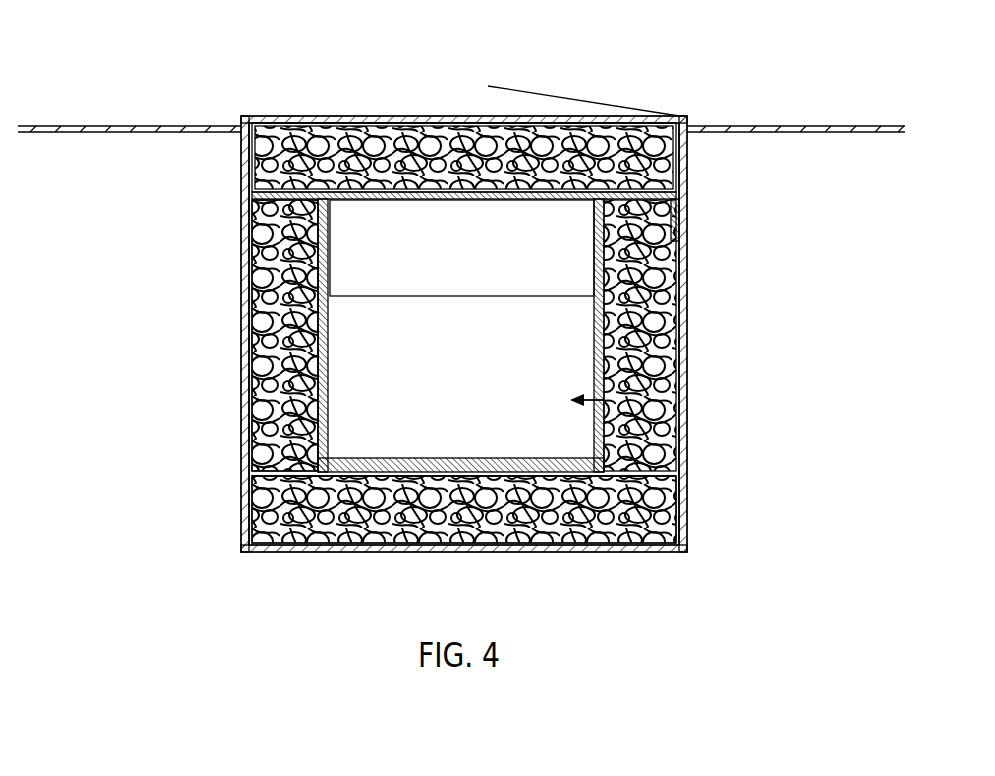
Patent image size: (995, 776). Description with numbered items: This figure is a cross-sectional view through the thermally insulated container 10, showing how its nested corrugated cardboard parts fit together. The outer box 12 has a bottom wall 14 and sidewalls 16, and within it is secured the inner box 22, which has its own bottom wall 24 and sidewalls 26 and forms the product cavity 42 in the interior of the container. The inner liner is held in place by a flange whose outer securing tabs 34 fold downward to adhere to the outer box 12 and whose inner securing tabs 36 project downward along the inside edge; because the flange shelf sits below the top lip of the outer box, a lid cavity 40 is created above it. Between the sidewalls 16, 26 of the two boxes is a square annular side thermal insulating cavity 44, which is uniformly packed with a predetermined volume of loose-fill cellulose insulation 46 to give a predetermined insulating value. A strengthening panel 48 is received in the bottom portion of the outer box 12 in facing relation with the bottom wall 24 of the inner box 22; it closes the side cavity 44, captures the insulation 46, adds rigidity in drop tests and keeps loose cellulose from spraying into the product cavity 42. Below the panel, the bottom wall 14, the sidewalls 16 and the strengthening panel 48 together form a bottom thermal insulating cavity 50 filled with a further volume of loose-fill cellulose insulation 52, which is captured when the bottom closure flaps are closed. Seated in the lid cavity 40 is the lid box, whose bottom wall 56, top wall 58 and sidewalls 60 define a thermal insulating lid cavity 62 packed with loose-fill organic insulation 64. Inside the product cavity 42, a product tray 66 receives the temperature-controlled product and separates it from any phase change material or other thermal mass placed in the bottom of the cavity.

The container 10 is at (722, 482).
The outer box 12 is at (262, 111).
The bottom wall 14 is at (450, 548).
The sidewalls 16 is at (247, 368).
The inner box 22 is at (676, 273).
The bottom wall 24 is at (388, 460).
The sidewalls 26 is at (257, 277).
The outer securing tabs 34 is at (678, 222).
The inner securing tabs 36 is at (338, 222).
The lid cavity 40 is at (238, 112).
The product cavity 42 is at (677, 343).
The side thermal insulating cavity 44 is at (677, 322).
The loose-fill cellulose insulation 46 is at (250, 320).
The strengthening panel 48 is at (670, 450).
The bottom thermal insulating cavity 50 is at (555, 533).
The loose-fill cellulose insulation 52 is at (368, 535).
The bottom wall 56 is at (337, 130).
The top wall 58 is at (572, 117).
The sidewalls 60 is at (248, 150).
The thermal insulating lid cavity 62 is at (495, 128).
The loose-fill organic insulation 64 is at (372, 130).
The product tray 66 is at (540, 296).